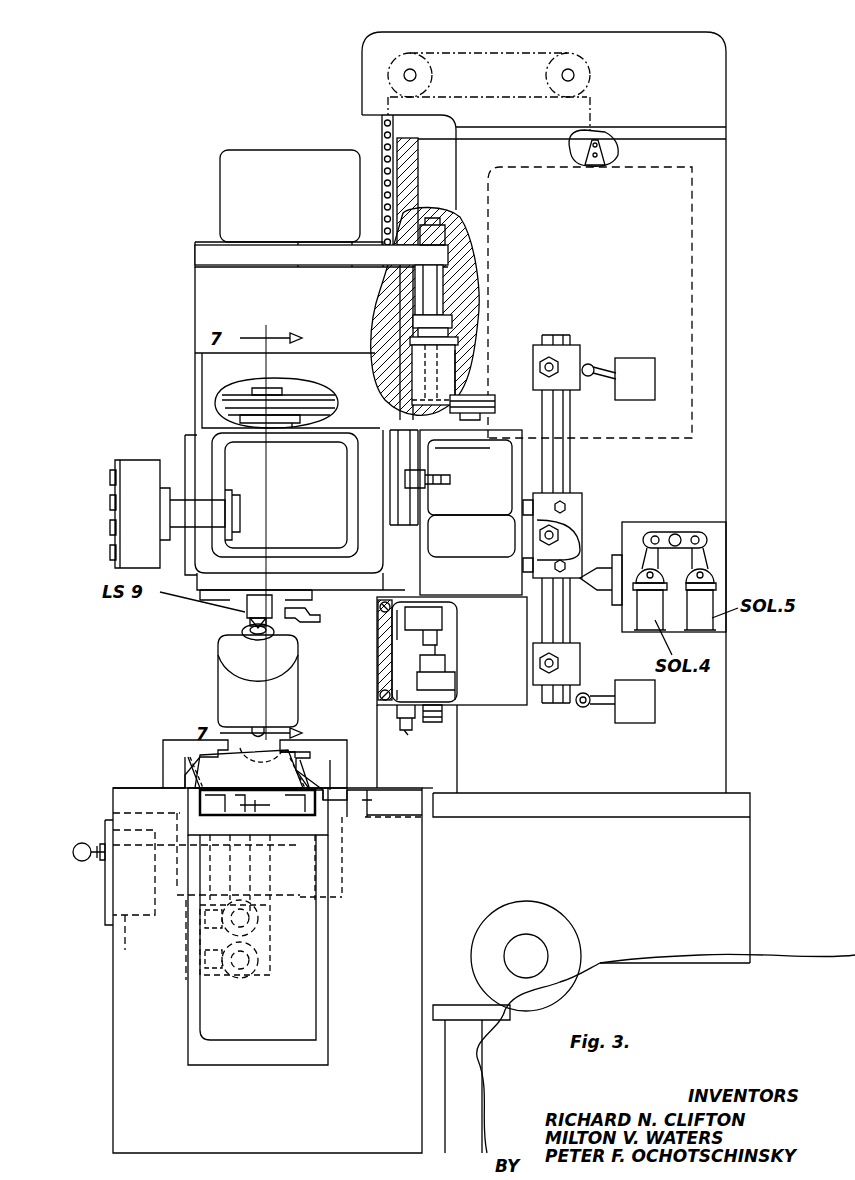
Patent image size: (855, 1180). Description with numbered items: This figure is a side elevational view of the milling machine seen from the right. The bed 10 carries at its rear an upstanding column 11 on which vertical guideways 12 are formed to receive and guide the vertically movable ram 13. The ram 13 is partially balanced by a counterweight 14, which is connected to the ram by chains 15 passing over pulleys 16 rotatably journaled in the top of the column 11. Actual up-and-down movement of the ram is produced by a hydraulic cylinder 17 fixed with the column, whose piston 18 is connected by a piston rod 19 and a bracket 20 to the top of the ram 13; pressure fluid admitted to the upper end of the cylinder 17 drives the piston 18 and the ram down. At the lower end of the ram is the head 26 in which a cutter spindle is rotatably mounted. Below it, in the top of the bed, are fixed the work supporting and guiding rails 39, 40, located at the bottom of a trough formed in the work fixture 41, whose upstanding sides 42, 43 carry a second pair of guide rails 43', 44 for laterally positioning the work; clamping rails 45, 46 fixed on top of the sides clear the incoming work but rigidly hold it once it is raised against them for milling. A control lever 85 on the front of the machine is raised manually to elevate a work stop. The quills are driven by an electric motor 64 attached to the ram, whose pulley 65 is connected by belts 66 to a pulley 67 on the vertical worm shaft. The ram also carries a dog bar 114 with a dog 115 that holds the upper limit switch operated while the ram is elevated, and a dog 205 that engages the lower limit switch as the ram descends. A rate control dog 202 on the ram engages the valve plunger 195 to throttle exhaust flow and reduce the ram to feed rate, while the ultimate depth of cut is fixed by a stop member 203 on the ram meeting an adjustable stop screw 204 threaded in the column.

The bed 10 is at (118, 1057).
The column 11 is at (726, 693).
The vertical guideways 12 is at (385, 140).
The ram 13 is at (200, 312).
The counterweight 14 is at (688, 197).
The chains 15 is at (395, 160).
The pulleys 16 is at (547, 78).
The cylinder 17 is at (448, 385).
The piston 18 is at (465, 395).
The piston rod 19 is at (440, 320).
The bracket 20 is at (447, 258).
The head 26 is at (222, 655).
The work supporting and guiding rail 39 is at (305, 926).
The work supporting and guiding rail 40 is at (251, 815).
The work fixture 41 is at (160, 788).
The upstanding side 42 is at (163, 760).
The upstanding side 43 is at (357, 780).
The guide rail 43' is at (165, 739).
The guide rail 44 is at (300, 770).
The clamping rail 45 is at (205, 743).
The clamping rail 46 is at (283, 760).
The electric motor 64 is at (482, 545).
The pulley 65 is at (475, 400).
The belts 66 is at (322, 398).
The pulley 67 is at (295, 400).
The control lever 85 is at (78, 845).
The dog bar 114 is at (575, 468).
The dog 115 is at (568, 358).
The valve plunger 195 is at (590, 597).
The rate control dog 202 is at (585, 525).
The stop member 203 is at (415, 620).
The adjustable stop screw 204 is at (440, 728).
The dog 205 is at (582, 667).